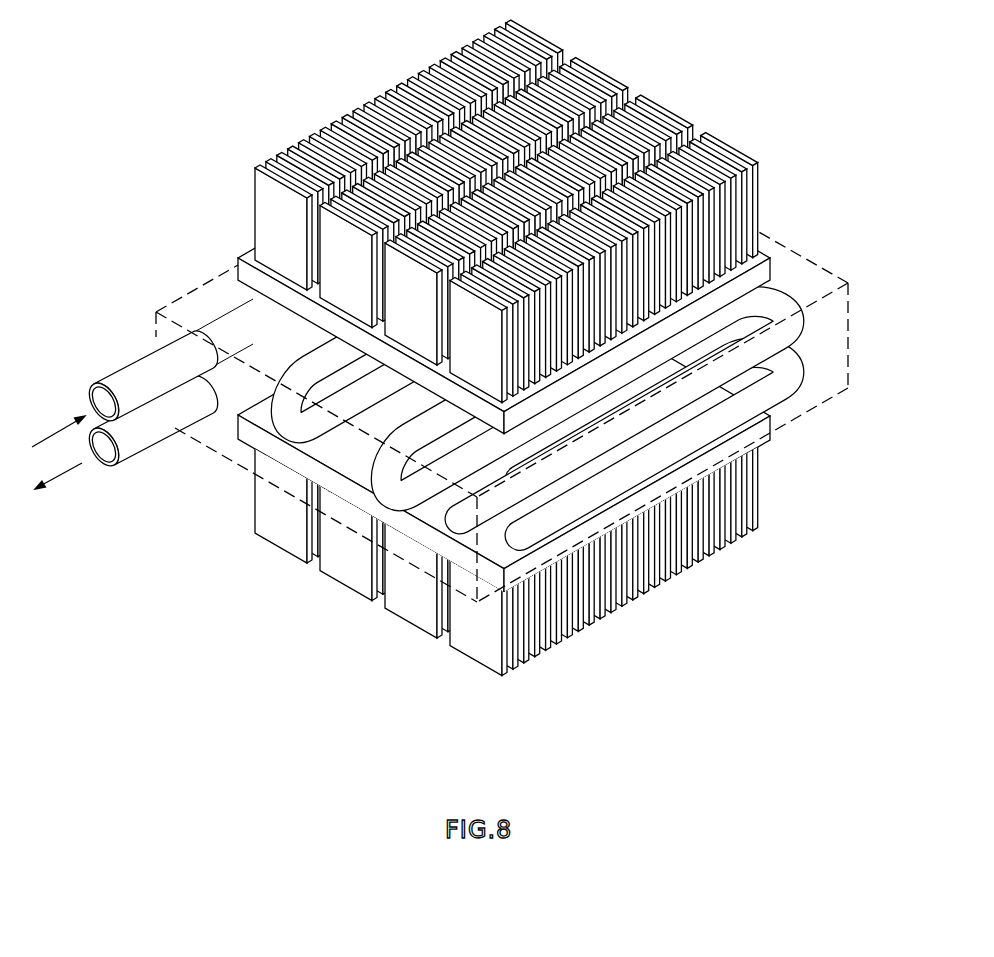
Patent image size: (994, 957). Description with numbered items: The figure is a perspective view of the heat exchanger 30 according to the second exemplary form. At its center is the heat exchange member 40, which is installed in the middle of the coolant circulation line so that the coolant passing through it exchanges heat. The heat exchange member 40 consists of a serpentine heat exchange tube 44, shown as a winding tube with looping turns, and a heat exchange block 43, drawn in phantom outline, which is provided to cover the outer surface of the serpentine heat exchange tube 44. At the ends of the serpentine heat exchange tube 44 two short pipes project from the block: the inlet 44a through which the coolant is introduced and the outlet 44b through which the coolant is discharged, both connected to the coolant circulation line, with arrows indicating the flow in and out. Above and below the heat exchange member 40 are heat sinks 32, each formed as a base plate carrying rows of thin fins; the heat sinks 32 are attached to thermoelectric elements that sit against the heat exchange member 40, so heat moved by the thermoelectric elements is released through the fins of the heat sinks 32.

The heat exchanger 30 is at (185, 28).
The heat sink 32 is at (262, 196).
The heat exchange member 40 is at (836, 233).
The heat exchange block 43 is at (848, 333).
The serpentine heat exchange tube 44 is at (290, 445).
The inlet 44a is at (123, 383).
The outlet 44b is at (133, 452).